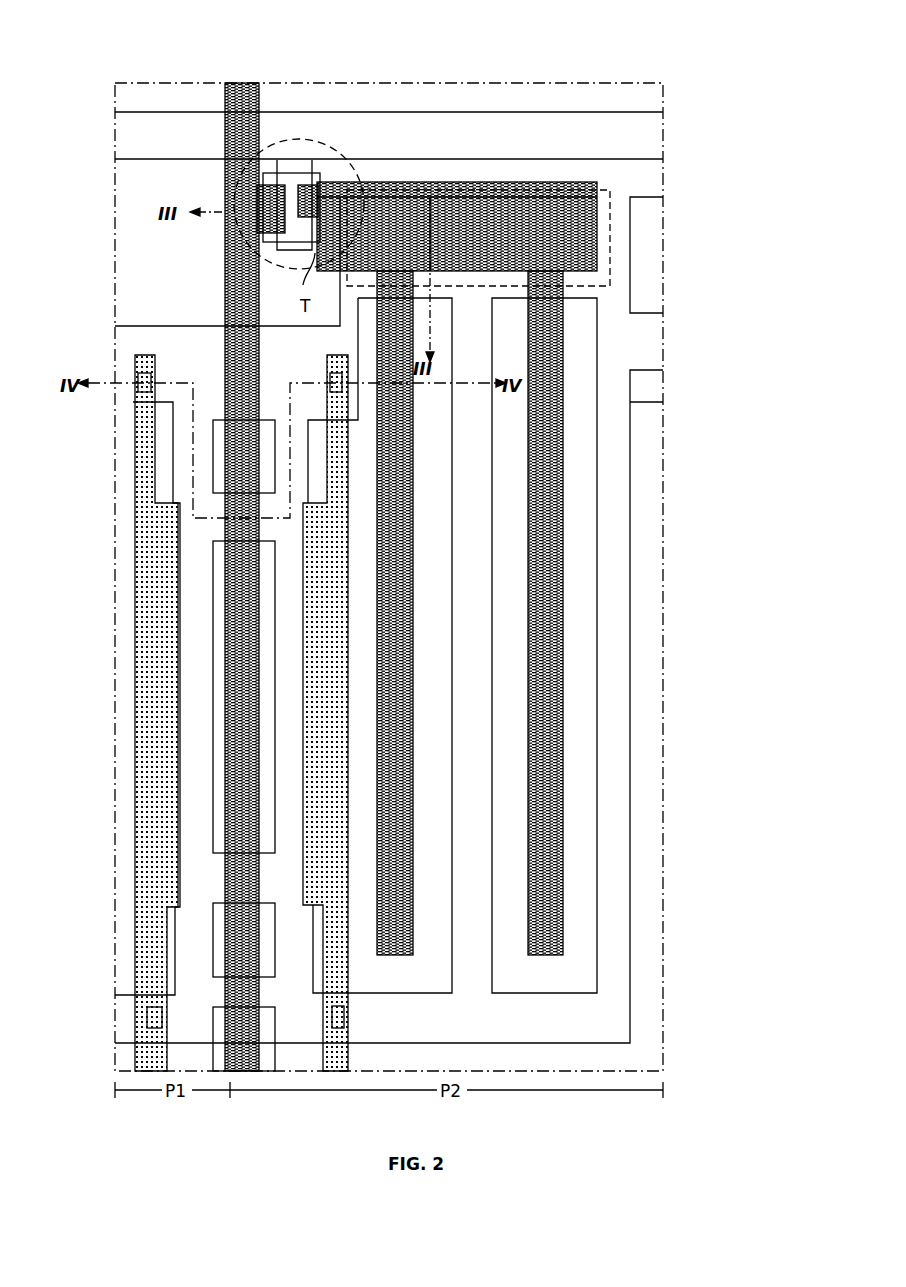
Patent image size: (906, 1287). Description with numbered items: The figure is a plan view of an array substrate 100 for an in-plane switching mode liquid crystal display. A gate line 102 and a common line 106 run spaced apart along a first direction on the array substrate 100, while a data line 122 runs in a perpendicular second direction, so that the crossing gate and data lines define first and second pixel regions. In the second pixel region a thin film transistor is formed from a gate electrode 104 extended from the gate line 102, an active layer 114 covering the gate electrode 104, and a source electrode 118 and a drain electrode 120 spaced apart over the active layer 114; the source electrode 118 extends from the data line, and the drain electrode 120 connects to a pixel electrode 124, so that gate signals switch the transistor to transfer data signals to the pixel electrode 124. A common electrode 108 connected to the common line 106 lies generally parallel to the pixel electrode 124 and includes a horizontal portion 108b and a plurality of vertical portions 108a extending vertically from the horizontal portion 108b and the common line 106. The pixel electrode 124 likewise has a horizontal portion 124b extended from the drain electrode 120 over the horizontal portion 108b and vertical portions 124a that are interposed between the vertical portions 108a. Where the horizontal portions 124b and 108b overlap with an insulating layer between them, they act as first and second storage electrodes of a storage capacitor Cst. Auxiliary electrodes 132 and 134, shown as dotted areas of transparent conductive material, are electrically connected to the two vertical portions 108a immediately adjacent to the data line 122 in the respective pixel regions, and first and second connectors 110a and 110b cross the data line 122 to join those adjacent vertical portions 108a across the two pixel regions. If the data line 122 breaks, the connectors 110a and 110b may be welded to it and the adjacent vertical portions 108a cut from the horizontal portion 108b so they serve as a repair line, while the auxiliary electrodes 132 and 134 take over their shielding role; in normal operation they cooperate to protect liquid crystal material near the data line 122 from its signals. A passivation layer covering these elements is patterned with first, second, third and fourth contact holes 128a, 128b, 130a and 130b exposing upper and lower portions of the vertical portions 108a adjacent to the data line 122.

The array substrate 100 is at (668, 722).
The gate line 102 is at (548, 112).
The gate electrode 104 is at (292, 252).
The common line 106 is at (628, 340).
The common electrode 108 is at (770, 306).
The vertical portions of the common electrode 108a is at (630, 401).
The horizontal portion of the common electrode 108b is at (630, 292).
The first connector 110a is at (267, 543).
The second connector 110b is at (273, 1020).
The active layer 114 is at (305, 173).
The source electrode 118 is at (272, 173).
The drain electrode 120 is at (313, 185).
The data line 122 is at (232, 578).
The pixel electrode 124 is at (538, 568).
The vertical portions of the pixel electrode 124a is at (565, 320).
The horizontal portion of the pixel electrode 124b is at (600, 217).
The first contact hole 128a is at (152, 370).
The second contact hole 128b is at (143, 1016).
The third contact hole 130a is at (327, 368).
The fourth contact hole 130b is at (338, 1030).
The auxiliary electrode 132 is at (140, 713).
The auxiliary electrode 134 is at (335, 608).
The storage capacitor Cst is at (612, 203).